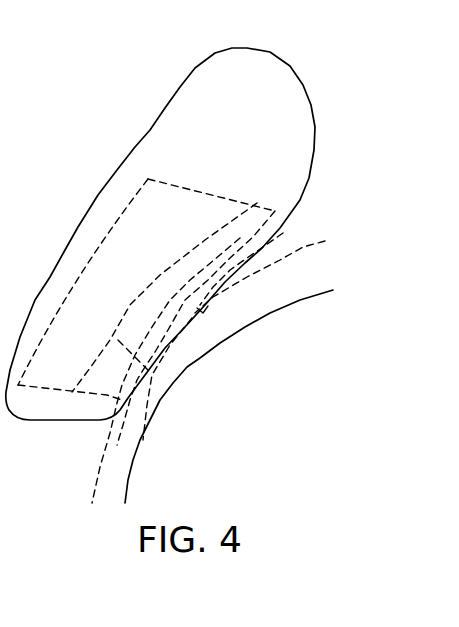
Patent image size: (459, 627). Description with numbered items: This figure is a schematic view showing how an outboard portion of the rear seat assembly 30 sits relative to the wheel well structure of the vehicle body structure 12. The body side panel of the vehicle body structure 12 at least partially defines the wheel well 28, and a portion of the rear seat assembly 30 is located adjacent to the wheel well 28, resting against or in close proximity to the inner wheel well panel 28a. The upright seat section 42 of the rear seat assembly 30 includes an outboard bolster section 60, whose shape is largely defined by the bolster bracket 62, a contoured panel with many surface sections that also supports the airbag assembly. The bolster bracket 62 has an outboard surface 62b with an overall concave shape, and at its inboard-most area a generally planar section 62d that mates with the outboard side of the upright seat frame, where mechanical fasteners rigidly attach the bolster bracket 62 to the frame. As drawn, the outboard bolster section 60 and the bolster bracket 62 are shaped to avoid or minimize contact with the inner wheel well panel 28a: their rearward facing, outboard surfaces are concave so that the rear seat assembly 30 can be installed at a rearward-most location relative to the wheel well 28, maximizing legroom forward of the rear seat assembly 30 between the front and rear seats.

The rear seat assembly 30 is at (192, 262).
The upright seat section 42 is at (192, 262).
The outboard bolster section 60 is at (312, 103).
The bolster bracket 62 is at (184, 326).
The outboard surface 62b is at (100, 442).
The planar section 62d is at (283, 233).
The vehicle body structure 12 is at (305, 273).
The wheel well 28 is at (238, 335).
The inner wheel well panel 28a is at (203, 313).